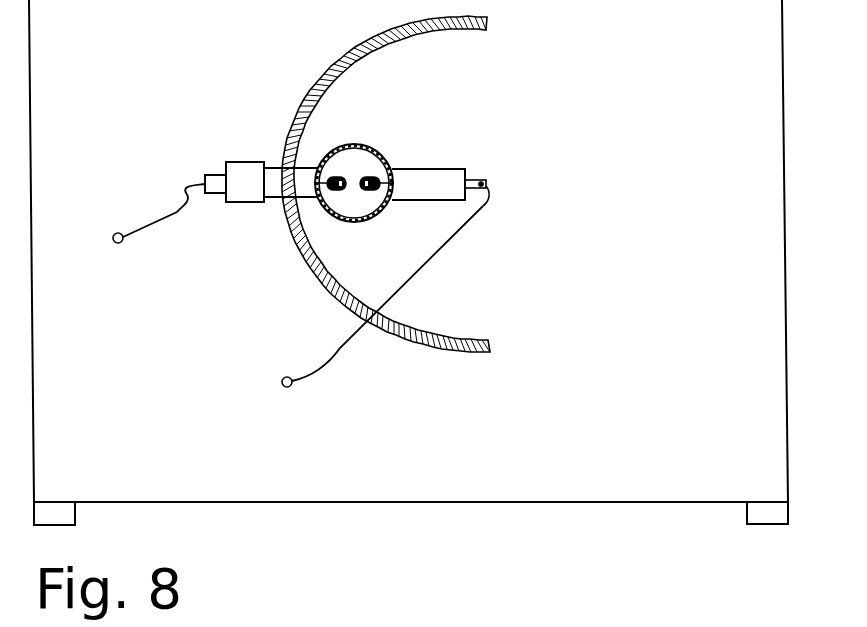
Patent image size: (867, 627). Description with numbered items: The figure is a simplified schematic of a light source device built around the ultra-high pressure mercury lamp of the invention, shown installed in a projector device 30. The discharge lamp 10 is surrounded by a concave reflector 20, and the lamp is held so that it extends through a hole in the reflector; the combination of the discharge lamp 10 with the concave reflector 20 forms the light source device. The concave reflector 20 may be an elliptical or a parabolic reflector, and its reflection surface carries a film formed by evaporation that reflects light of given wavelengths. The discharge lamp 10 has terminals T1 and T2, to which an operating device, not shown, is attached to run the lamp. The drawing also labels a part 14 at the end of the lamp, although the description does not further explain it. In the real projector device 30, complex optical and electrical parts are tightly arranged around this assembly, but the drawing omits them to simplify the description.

The discharge lamp 10 is at (335, 152).
The lead terminal 14 is at (515, 209).
The concave reflector 20 is at (386, 216).
The projector device 30 is at (408, 291).
The terminal T1 is at (133, 218).
The terminal T2 is at (349, 304).